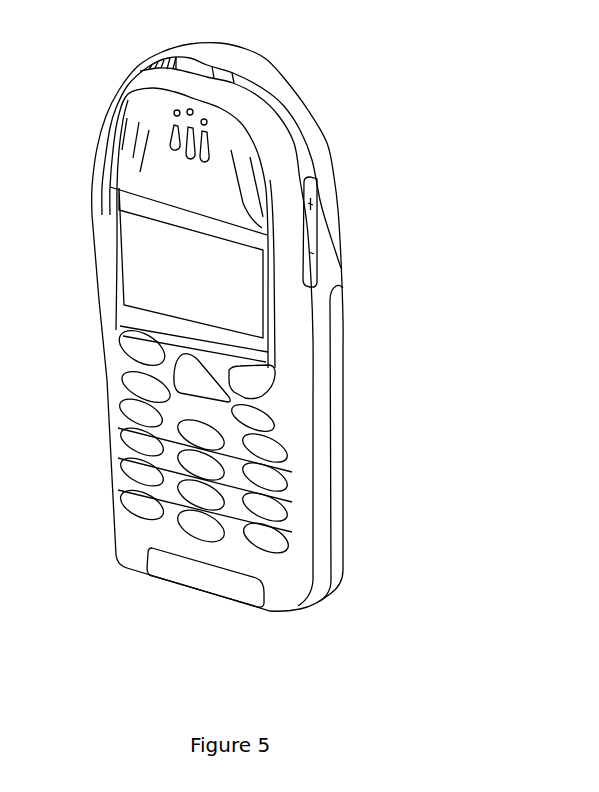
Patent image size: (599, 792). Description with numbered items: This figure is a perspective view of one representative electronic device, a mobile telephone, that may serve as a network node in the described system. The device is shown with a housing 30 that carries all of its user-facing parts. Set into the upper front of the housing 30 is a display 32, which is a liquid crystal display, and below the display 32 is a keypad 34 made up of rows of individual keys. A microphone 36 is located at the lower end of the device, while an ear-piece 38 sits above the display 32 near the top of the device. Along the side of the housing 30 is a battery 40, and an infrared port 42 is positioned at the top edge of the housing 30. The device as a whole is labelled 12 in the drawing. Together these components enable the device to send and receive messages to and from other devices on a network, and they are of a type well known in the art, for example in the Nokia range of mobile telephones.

The mobile telephone 12 is at (300, 49).
The housing 30 is at (318, 160).
The display 32 is at (248, 306).
The keypad 34 is at (268, 548).
The microphone 36 is at (162, 570).
The ear-piece 38 is at (182, 130).
The battery 40 is at (338, 528).
The infrared port 42 is at (212, 64).